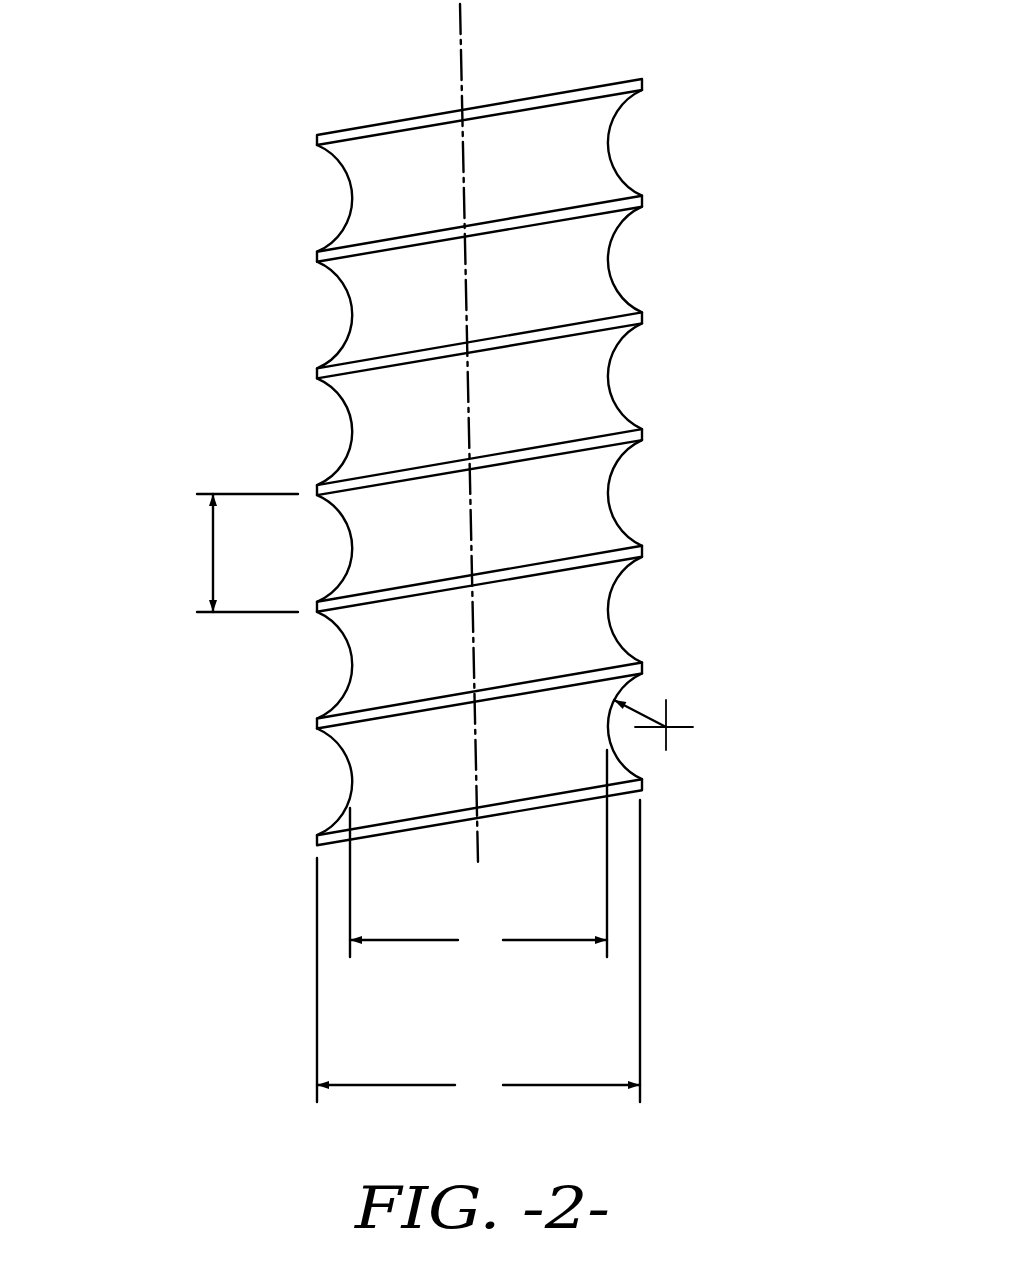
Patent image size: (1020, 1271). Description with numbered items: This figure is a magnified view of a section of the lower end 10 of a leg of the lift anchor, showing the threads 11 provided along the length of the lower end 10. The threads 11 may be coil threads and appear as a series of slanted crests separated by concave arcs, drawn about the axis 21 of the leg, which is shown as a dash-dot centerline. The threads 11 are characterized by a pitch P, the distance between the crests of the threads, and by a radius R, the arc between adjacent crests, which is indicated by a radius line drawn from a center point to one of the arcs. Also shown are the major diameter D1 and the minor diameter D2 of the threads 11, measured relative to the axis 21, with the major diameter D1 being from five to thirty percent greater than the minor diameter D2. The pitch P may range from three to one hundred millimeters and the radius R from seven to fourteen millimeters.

The lower end 10 is at (425, 163).
The threads 11 is at (317, 255).
The axis 21 is at (465, 271).
The pitch P is at (213, 555).
The radius R is at (640, 703).
The major diameter D1 is at (478, 854).
The minor diameter D2 is at (478, 952).